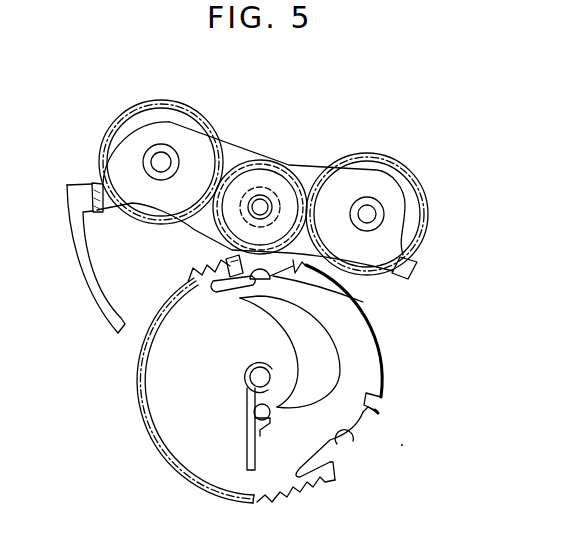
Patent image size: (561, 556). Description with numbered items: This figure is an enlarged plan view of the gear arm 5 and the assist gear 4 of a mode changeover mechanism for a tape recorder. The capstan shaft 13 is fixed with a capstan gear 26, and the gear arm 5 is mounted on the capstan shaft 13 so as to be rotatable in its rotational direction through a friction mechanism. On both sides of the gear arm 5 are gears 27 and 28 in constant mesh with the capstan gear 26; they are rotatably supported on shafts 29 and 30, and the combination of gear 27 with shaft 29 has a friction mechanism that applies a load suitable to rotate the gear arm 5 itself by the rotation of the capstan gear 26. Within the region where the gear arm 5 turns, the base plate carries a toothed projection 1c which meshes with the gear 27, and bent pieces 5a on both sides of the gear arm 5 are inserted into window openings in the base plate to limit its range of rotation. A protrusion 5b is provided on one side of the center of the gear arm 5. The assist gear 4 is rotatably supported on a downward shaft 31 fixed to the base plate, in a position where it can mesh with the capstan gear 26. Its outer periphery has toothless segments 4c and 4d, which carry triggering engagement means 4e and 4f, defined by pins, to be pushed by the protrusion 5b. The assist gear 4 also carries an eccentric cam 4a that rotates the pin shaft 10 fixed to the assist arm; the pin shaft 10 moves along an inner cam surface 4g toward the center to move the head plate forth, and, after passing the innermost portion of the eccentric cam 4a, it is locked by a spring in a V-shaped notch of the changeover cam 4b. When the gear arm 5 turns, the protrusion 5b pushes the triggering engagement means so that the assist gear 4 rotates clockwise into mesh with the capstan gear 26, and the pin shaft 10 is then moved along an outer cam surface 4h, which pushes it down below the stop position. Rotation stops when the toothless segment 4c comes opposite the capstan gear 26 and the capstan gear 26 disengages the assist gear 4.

The gear arm 5 is at (147, 120).
The gear 27 is at (166, 99).
The shaft 29 is at (156, 158).
The capstan gear 26 is at (277, 170).
The capstan shaft 13 is at (260, 203).
The gear 28 is at (388, 156).
The shaft 30 is at (364, 210).
The bent piece 5a is at (95, 184).
The toothed projection 1c is at (93, 213).
The protrusion 5b is at (213, 263).
The toothless segment 4c is at (297, 251).
The assist gear 4 is at (139, 406).
The triggering engagement means 4e is at (363, 302).
The eccentric cam 4a is at (330, 363).
The inner cam surface 4g is at (280, 322).
The downward shaft 31 is at (259, 377).
The changeover cam 4b is at (247, 431).
The pin shaft 10 is at (270, 412).
The outer cam surface 4h is at (380, 401).
The triggering engagement means 4f is at (353, 443).
The toothless segment 4d is at (334, 466).